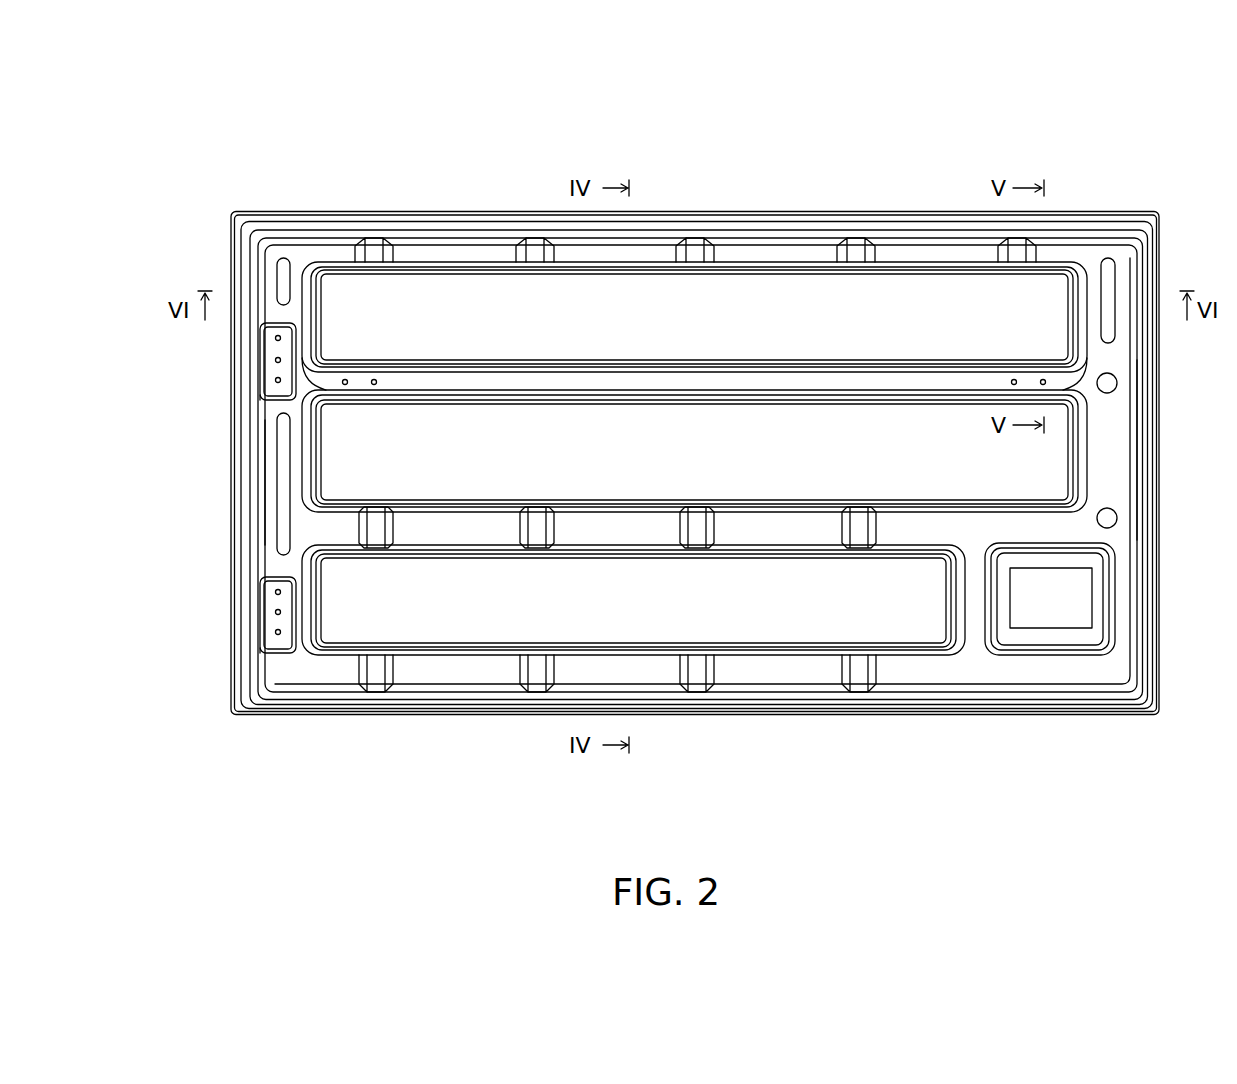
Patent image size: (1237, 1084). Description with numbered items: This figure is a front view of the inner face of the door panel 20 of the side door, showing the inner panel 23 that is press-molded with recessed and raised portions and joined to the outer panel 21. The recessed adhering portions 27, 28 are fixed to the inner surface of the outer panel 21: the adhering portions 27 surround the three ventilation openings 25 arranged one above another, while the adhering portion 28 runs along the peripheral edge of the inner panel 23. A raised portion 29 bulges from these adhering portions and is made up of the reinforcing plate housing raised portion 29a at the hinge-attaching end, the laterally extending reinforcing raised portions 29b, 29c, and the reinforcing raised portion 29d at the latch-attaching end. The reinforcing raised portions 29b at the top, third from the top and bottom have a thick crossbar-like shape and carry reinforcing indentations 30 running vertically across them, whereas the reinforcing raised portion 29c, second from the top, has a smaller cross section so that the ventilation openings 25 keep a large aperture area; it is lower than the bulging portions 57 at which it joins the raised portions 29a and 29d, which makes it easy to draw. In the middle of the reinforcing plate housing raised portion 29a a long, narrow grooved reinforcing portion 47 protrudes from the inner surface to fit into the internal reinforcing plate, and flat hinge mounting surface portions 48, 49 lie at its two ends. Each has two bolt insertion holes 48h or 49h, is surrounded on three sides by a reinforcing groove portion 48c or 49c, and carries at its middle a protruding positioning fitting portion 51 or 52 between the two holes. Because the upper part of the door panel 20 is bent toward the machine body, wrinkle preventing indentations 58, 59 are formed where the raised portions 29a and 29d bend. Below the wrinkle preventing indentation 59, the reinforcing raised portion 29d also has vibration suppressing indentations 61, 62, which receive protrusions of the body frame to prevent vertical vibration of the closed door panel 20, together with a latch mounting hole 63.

The door panel 20 is at (1097, 199).
The outer panel 21 is at (1125, 212).
The inner panel 23 is at (1125, 236).
The ventilation openings 25 is at (452, 430).
The adhering portions 27 is at (638, 270).
The adhering portion 28 is at (683, 222).
The raised portion 29 is at (717, 230).
The reinforcing plate housing raised portion 29a is at (262, 510).
The reinforcing raised portions 29b is at (748, 246).
The reinforcing raised portion 29c is at (808, 378).
The reinforcing raised portion 29d is at (1117, 450).
The reinforcing indentations 30 is at (855, 240).
The grooved reinforcing portion 47 is at (281, 467).
The hinge mounting surface portion 48 is at (270, 388).
The reinforcing groove portion 48c is at (262, 400).
The bolt insertion holes 48h is at (275, 338).
The hinge mounting surface portion 49 is at (270, 641).
The reinforcing groove portion 49c is at (262, 653).
The bolt insertion holes 49h is at (275, 592).
The positioning fitting portion 51 is at (275, 360).
The positioning fitting portion 52 is at (275, 612).
The bulging portions 57 is at (330, 378).
The wrinkle preventing indentation 58 is at (283, 262).
The wrinkle preventing indentation 59 is at (1108, 270).
The vibration suppressing indentation 61 is at (1107, 384).
The vibration suppressing indentation 62 is at (1107, 518).
The latch mounting hole 63 is at (1105, 598).